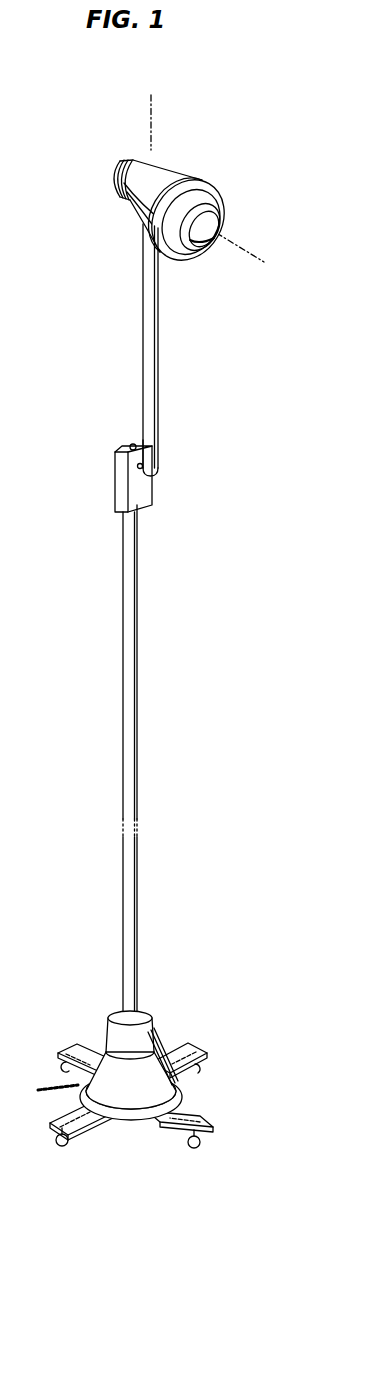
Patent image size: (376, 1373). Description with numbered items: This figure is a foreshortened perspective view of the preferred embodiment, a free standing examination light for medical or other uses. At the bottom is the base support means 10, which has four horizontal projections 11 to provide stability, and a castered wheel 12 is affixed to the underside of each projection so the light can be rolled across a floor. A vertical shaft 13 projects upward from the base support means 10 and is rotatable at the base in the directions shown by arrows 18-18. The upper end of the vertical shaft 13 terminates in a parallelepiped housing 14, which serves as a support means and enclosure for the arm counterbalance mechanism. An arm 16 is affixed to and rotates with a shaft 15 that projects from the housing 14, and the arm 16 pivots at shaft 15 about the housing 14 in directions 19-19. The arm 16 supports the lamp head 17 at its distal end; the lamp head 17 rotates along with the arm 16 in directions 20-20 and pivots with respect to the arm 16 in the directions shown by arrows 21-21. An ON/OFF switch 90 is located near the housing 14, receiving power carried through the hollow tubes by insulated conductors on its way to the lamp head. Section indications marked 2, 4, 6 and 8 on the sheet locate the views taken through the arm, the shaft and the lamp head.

The section line 2- 2 is at (132, 412).
The section line 4- 4 is at (117, 972).
The section line 6- 6 is at (150, 225).
The section line 8- 8 is at (55, 148).
The base support means 10 is at (151, 1033).
The horizontal projections 11 is at (66, 1045).
The castered wheel 12 is at (60, 1066).
The vertical shaft 13 is at (138, 668).
The parallelepiped housing 14 is at (153, 500).
The shaft 15 is at (138, 472).
The arm 16 is at (158, 421).
The lamp head 17 is at (218, 192).
The arrows 18- 18 is at (173, 842).
The directions 19- 19 is at (113, 147).
The directions 20- 20 is at (177, 286).
The arrows 21- 21 is at (254, 300).
The ON/OFF switch 90 is at (128, 445).